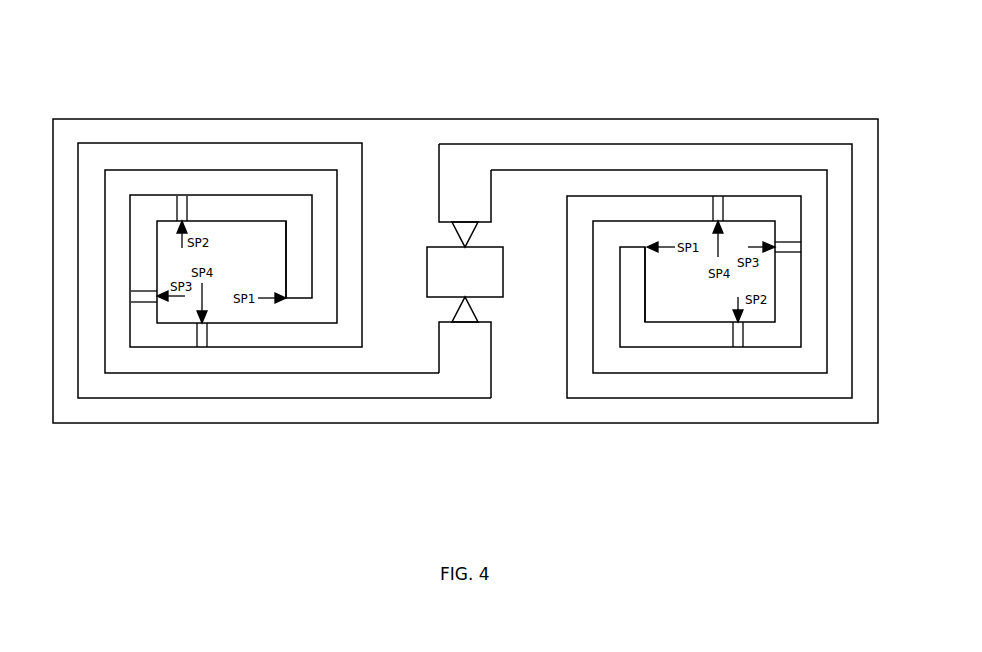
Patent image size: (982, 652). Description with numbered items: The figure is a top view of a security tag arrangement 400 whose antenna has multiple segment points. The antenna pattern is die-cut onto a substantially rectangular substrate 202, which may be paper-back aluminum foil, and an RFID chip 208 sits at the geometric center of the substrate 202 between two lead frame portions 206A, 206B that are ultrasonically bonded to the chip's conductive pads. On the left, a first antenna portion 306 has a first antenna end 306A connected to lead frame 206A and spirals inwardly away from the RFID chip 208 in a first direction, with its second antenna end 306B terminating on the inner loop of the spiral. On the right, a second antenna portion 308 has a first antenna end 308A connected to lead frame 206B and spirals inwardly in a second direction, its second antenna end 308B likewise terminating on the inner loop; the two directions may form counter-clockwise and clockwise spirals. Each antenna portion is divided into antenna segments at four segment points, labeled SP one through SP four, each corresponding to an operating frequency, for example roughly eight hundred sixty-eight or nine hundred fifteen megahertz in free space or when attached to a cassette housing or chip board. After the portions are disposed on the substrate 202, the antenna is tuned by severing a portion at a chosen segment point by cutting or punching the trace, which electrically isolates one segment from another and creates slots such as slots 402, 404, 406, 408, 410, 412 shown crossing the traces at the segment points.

The RFID tag assembly 400 is at (827, 29).
The substrate 202 is at (529, 385).
The RFID chip 208 is at (465, 272).
The lead frame 206A is at (454, 313).
The lead frame 206B is at (454, 235).
The first antenna portion 306 is at (234, 143).
The first antenna end 306A is at (491, 344).
The second antenna end 306B is at (286, 272).
The second antenna portion 308 is at (684, 144).
The first antenna end 308A is at (491, 192).
The second antenna end 308B is at (645, 283).
The slot 402 is at (182, 218).
The slot 404 is at (150, 296).
The slot 406 is at (202, 347).
The slot 408 is at (738, 347).
The slot 410 is at (785, 247).
The slot 412 is at (718, 218).